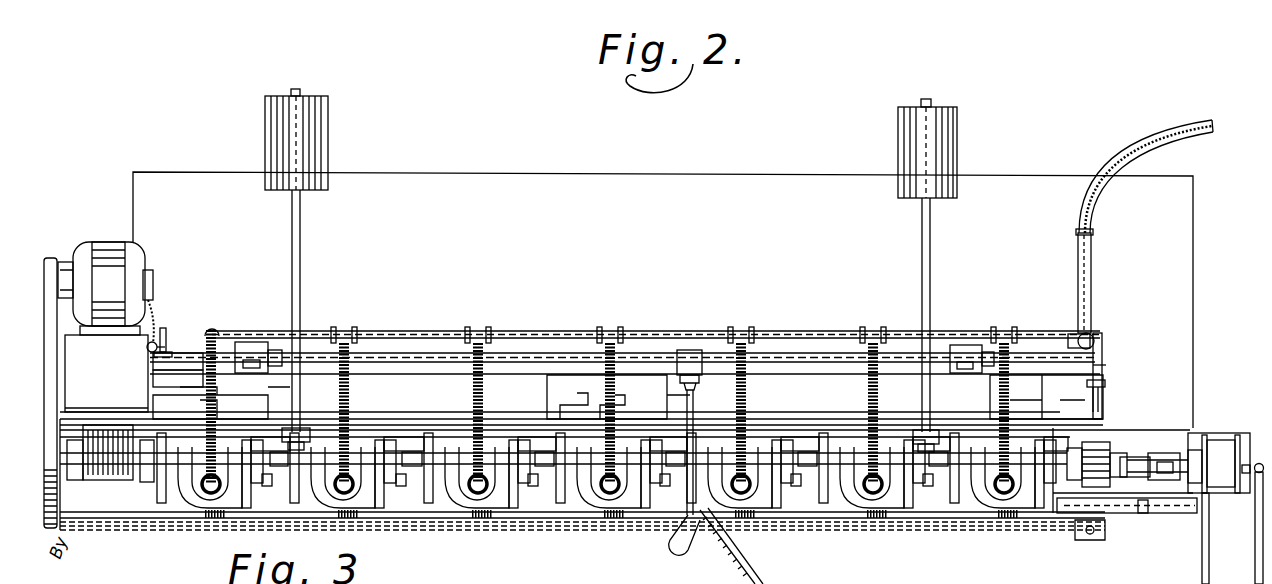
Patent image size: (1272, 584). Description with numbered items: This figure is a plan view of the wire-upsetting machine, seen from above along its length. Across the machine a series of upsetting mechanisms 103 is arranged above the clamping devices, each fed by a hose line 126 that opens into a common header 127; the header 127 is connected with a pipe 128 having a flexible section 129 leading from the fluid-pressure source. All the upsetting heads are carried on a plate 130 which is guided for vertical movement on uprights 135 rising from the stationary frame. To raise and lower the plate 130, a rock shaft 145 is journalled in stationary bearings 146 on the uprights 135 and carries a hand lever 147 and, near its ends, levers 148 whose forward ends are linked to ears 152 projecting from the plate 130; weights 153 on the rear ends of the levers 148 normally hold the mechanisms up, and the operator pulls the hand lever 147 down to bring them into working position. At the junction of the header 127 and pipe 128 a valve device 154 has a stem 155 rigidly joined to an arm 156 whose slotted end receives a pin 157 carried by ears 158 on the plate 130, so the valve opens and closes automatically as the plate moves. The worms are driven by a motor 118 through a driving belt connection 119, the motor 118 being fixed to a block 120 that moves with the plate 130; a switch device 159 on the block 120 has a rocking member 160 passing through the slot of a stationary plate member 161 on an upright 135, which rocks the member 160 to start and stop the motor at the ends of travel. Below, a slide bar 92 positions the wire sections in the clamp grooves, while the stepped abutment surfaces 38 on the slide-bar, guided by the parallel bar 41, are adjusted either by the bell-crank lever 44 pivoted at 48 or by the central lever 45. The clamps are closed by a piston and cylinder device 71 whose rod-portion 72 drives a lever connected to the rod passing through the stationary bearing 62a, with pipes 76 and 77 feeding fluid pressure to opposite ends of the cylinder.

The abutment surfaces 38 is at (487, 520).
The parallel bar 41 is at (582, 530).
The lever 44 is at (1233, 512).
The lever 45 is at (750, 573).
The pivot 48 is at (1148, 513).
The stationary bearing 62a is at (1097, 455).
The piston and cylinder device 71 is at (1222, 440).
The rod-portion 72 is at (1180, 457).
The pipe 76 is at (1255, 549).
The pipe 77 is at (1209, 572).
The slide bar 92 is at (412, 482).
The upsetting mechanism 103 is at (360, 441).
The motor 118 is at (107, 242).
The driving belt connection 119 is at (45, 372).
The block 120 is at (106, 395).
The hose line 126 is at (351, 330).
The header 127 is at (419, 332).
The pipe 128 is at (1093, 260).
The flexible section 129 is at (1152, 135).
The plate 130 is at (803, 424).
The uprights 135 is at (1050, 392).
The rock shaft 145 is at (812, 365).
The stationary bearings 146 is at (248, 342).
The hand lever 147 is at (693, 412).
The levers 148 is at (300, 237).
The ears 152 is at (296, 428).
The weights 153 is at (330, 140).
The valve device 154 is at (1103, 332).
The valve stem 155 is at (1098, 337).
The arm 156 is at (1106, 365).
The pin 157 is at (1105, 383).
The ears 158 is at (1103, 408).
The switch device 159 is at (147, 350).
The rocking member 160 is at (160, 330).
The stationary plate member 161 is at (172, 338).